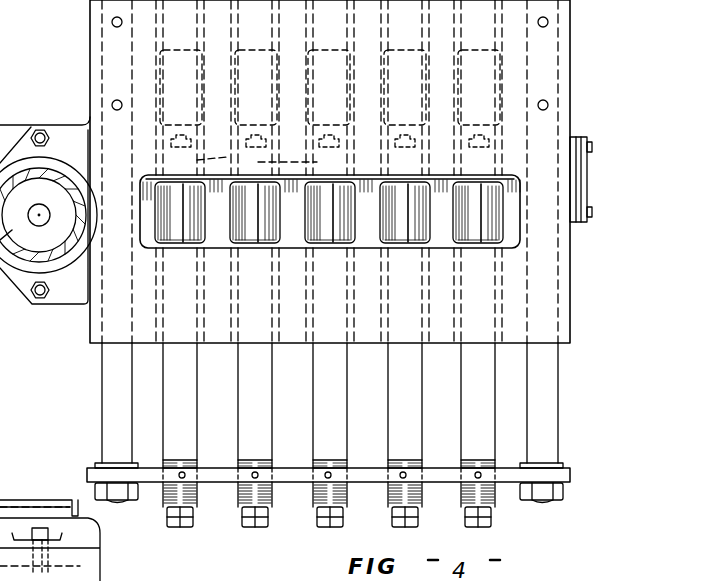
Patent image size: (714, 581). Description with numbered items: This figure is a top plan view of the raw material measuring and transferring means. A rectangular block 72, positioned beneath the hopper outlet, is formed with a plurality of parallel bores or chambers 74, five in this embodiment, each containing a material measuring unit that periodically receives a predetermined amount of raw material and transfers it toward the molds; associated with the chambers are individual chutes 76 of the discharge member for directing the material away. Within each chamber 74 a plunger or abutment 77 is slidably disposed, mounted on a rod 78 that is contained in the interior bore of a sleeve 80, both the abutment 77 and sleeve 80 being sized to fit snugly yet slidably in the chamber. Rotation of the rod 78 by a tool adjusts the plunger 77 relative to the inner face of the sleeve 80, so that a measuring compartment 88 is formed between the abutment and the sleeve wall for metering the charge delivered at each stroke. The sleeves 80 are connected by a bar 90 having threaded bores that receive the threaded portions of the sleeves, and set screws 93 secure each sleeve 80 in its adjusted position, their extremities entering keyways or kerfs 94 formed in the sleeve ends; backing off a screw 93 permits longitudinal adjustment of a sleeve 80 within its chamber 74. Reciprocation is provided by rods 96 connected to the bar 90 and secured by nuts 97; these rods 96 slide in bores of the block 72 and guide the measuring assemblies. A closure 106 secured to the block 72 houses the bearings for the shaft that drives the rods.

The block 72 is at (88, 65).
The chambers 74 is at (287, 128).
The chutes 76 is at (317, 69).
The plunger 77 is at (257, 160).
The rod 78 is at (327, 213).
The sleeve 80 is at (193, 403).
The measuring compartment 88 is at (303, 237).
The bar 90 is at (300, 456).
The set screws 93 is at (184, 472).
The keyways 94 is at (188, 503).
The rods 96 is at (105, 392).
The nuts 97 is at (133, 495).
The closure 106 is at (586, 172).